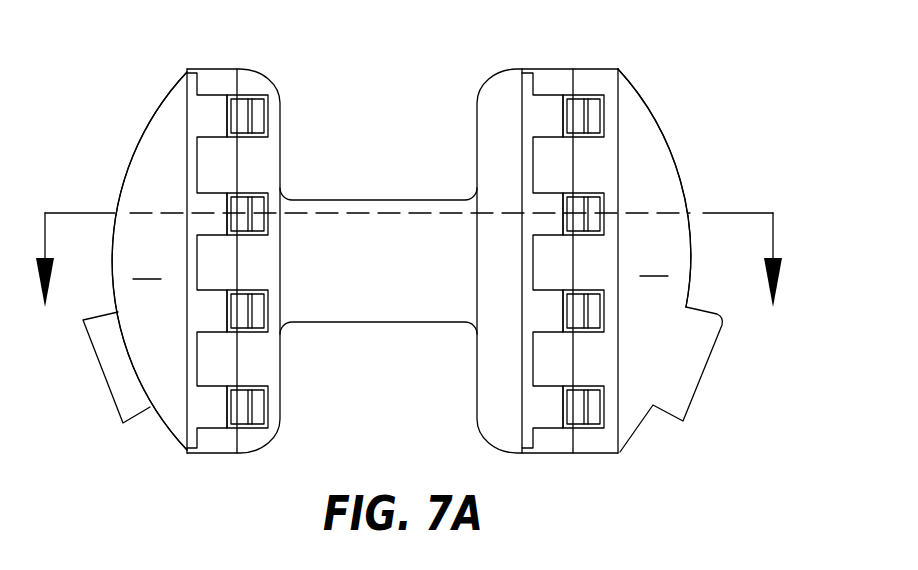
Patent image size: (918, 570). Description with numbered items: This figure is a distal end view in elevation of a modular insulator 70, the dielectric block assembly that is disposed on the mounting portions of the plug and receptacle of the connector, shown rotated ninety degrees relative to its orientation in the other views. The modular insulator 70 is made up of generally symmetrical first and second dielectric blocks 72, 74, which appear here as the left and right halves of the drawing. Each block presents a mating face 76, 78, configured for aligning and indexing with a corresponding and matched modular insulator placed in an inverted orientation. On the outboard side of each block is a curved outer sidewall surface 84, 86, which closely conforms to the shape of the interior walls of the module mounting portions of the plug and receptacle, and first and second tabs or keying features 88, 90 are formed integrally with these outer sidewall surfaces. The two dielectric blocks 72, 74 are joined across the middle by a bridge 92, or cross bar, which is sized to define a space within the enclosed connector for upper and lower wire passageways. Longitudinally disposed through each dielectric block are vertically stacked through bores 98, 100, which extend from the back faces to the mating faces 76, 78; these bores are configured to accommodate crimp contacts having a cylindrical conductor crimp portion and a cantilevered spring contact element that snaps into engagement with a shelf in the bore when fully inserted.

The modular insulator 70 is at (583, 34).
The first dielectric block 72 is at (153, 128).
The second dielectric block 74 is at (650, 128).
The mating face 76 is at (206, 261).
The mating face 78 is at (572, 261).
The curved outer sidewall surface 84 is at (118, 157).
The curved outer sidewall surface 86 is at (690, 157).
The first tab or keying feature 88 is at (102, 384).
The second tab or keying feature 90 is at (707, 382).
The bridge 92 is at (373, 228).
The through bores 98 is at (259, 207).
The through bores 100 is at (570, 207).